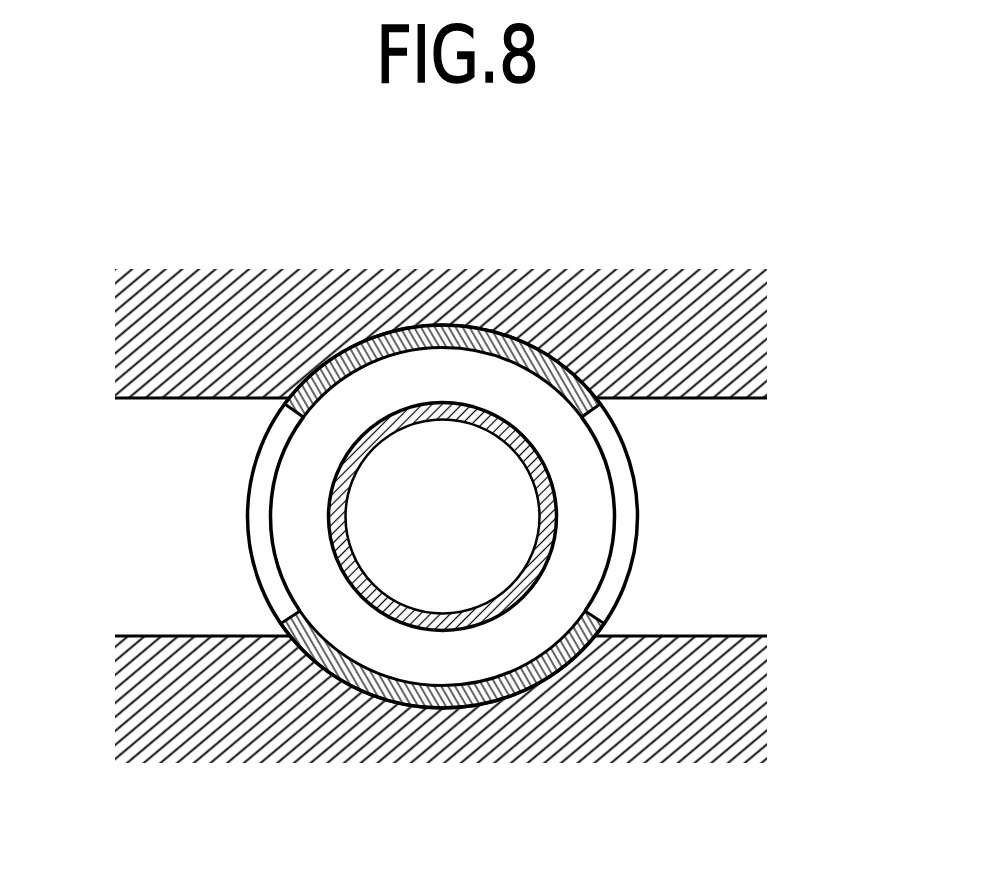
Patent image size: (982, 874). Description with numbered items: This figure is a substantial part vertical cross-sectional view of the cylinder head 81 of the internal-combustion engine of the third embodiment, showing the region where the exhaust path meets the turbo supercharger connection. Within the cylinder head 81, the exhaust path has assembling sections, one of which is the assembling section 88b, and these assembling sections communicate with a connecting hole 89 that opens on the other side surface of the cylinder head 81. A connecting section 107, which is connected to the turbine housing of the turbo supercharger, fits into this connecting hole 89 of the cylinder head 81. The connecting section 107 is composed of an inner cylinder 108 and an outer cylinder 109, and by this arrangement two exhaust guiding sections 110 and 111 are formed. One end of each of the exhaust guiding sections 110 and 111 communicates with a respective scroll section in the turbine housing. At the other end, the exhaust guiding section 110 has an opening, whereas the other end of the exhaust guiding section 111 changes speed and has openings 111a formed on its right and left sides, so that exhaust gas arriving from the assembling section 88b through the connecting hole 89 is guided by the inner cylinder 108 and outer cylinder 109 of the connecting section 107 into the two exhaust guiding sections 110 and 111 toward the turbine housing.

The cylinder head 81 is at (597, 743).
The assembling section 88b is at (150, 541).
The connecting hole 89 is at (336, 679).
The connecting section 107 is at (338, 348).
The inner cylinder 108 is at (446, 404).
The outer cylinder 109 is at (578, 333).
The exhaust guiding section 110 is at (440, 582).
The exhaust guiding section 111 is at (581, 563).
The opening 111a is at (270, 458).